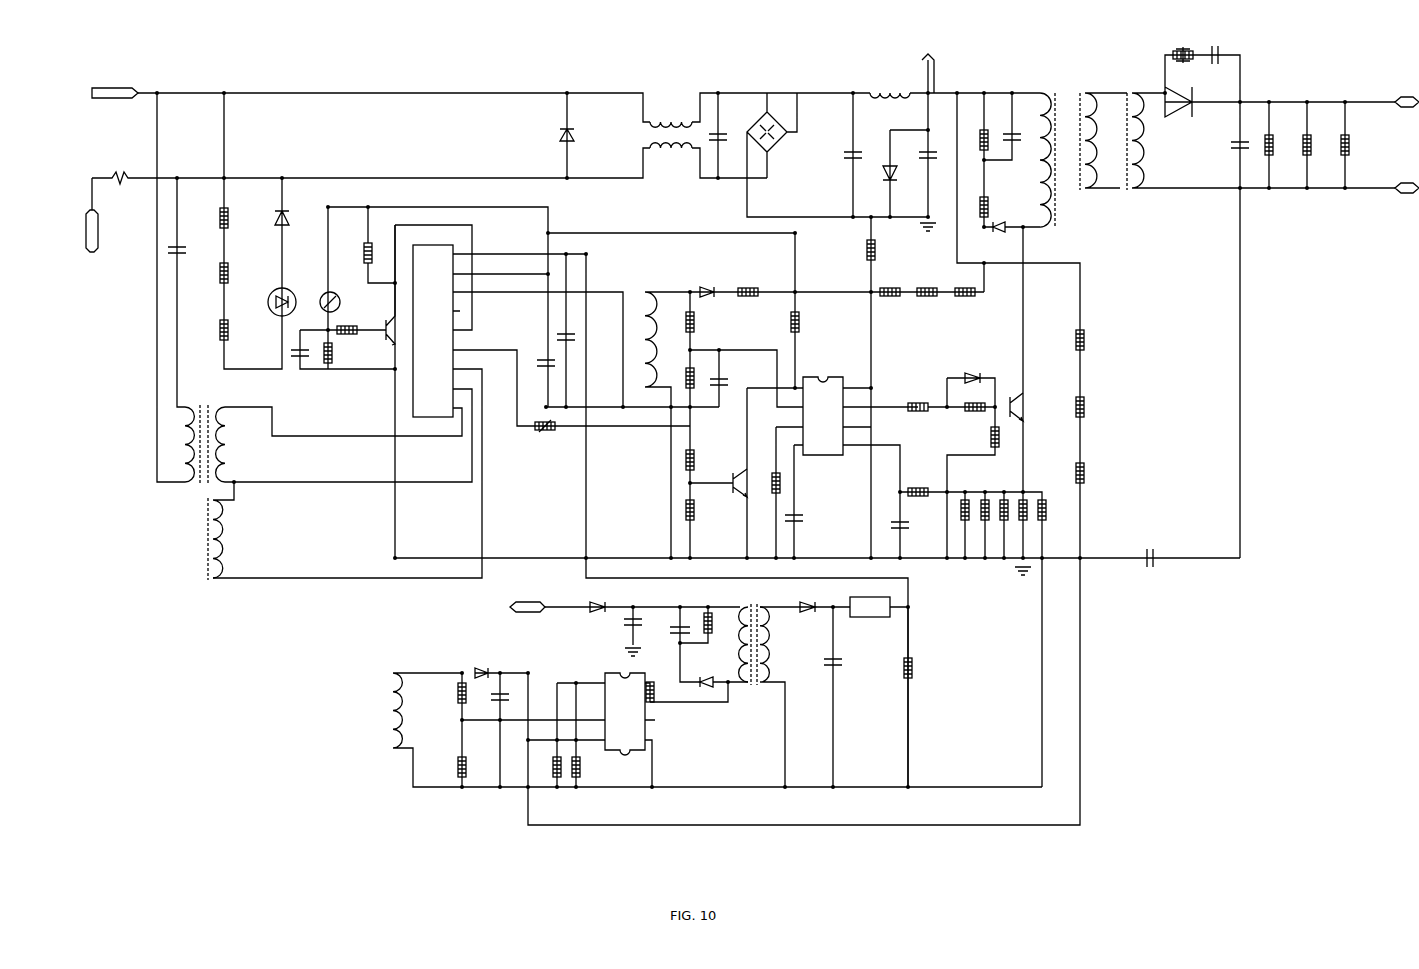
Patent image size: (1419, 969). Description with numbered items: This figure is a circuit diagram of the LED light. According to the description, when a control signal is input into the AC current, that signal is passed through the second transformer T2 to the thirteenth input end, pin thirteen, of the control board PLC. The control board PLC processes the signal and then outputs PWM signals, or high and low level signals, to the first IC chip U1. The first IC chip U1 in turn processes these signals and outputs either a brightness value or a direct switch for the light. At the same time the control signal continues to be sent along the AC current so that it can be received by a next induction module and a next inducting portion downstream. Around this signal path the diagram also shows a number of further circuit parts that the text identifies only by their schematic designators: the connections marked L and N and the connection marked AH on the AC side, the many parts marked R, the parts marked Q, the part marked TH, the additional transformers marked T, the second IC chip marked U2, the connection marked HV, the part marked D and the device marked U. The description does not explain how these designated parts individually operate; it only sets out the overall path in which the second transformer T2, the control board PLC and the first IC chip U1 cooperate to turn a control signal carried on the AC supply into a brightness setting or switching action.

The line input terminal L is at (115, 103).
The neutral input terminal N is at (98, 215).
The resistor R is at (789, 405).
The transistor Q is at (708, 361).
The control board PLC is at (433, 323).
The thermistor TH is at (545, 436).
The second transformer T2 is at (201, 454).
The transformer T is at (492, 631).
The auxiliary terminal AH is at (939, 73).
The first IC chip U1 is at (823, 416).
The integrated circuit U2 is at (625, 714).
The high voltage input HV is at (527, 598).
The diode D is at (807, 598).
The regulator U is at (870, 607).